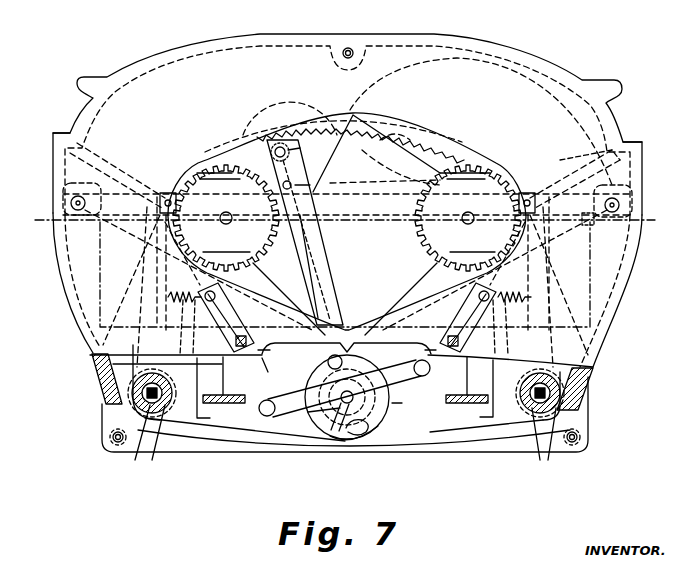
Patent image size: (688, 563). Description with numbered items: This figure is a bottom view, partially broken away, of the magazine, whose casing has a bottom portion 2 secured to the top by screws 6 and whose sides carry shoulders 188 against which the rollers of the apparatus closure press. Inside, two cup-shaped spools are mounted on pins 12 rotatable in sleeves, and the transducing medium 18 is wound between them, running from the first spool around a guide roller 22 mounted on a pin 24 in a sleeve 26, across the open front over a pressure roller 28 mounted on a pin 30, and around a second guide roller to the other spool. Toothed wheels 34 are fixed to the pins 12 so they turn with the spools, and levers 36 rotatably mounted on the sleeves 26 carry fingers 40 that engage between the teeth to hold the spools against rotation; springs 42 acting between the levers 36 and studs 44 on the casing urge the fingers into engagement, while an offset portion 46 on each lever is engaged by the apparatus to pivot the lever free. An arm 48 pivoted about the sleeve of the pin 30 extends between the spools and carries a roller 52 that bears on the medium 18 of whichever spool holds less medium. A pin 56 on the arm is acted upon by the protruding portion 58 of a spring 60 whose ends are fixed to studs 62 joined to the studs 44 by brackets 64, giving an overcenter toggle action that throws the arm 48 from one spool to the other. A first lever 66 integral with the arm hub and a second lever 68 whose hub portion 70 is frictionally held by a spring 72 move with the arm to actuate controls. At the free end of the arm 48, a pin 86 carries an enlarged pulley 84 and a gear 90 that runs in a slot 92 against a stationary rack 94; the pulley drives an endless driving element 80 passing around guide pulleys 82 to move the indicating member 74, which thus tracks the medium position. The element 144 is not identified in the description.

The bottom portion 2 is at (158, 55).
The screws 6 is at (580, 438).
The shoulders 188 is at (636, 142).
The guide pulleys 82 is at (645, 209).
The indicating member 74 is at (592, 228).
The driving element 80 is at (590, 166).
The toothed wheels 34 is at (498, 166).
The rack 144 is at (462, 152).
The enlarged pulley 84 is at (281, 102).
The stationary rack 94 is at (388, 145).
The slot 92 is at (378, 168).
The pins 12 is at (474, 216).
The fingers 40 is at (530, 192).
The arm 48 is at (313, 268).
The pin 86 is at (275, 143).
The gear 90 is at (305, 147).
The roller 52 is at (318, 188).
The studs 44 is at (516, 292).
The brackets 64 is at (488, 305).
The studs 62 is at (455, 333).
The springs 42 is at (362, 327).
The levers 36 is at (548, 365).
The transducing medium 18 is at (448, 446).
The pin 24 is at (520, 396).
The guide roller 22 is at (562, 406).
The sleeve 26 is at (353, 439).
The pressure roller 28 is at (338, 437).
The offset portion 46 is at (482, 420).
The protruding portion 58 is at (328, 352).
The pin 56 is at (328, 362).
The spring 60 is at (265, 367).
The pin 30 is at (345, 404).
The first lever 66 is at (285, 415).
The second lever 68 is at (320, 425).
The hub portion 70 is at (370, 428).
The spring 72 is at (366, 438).